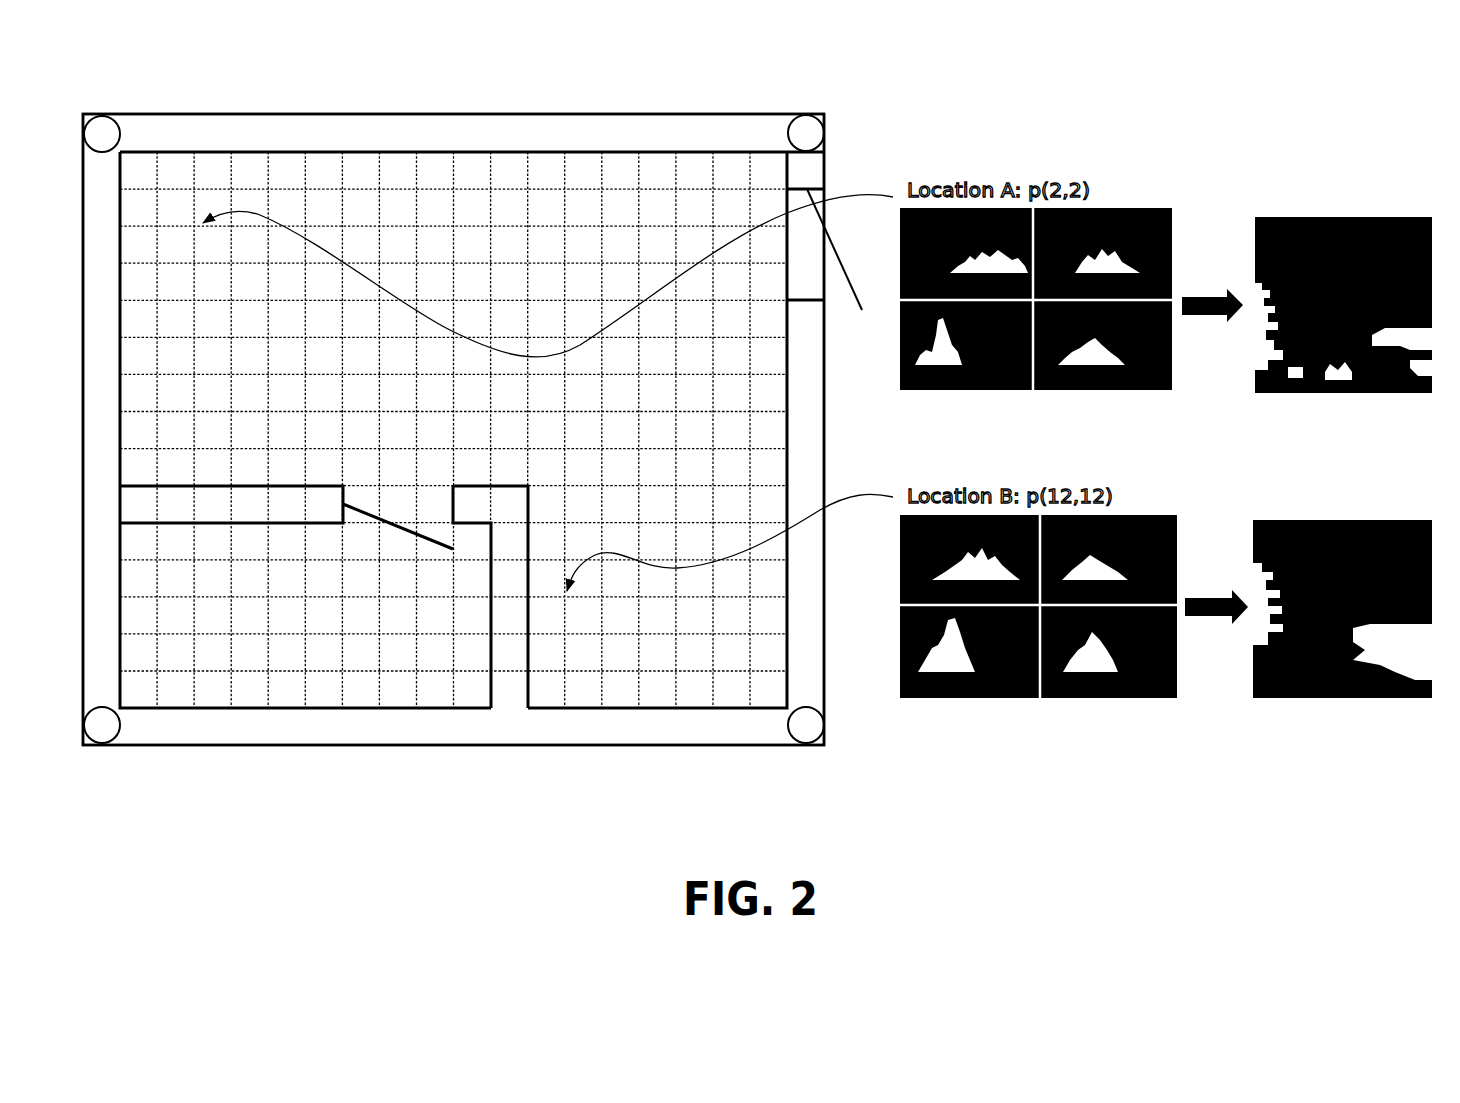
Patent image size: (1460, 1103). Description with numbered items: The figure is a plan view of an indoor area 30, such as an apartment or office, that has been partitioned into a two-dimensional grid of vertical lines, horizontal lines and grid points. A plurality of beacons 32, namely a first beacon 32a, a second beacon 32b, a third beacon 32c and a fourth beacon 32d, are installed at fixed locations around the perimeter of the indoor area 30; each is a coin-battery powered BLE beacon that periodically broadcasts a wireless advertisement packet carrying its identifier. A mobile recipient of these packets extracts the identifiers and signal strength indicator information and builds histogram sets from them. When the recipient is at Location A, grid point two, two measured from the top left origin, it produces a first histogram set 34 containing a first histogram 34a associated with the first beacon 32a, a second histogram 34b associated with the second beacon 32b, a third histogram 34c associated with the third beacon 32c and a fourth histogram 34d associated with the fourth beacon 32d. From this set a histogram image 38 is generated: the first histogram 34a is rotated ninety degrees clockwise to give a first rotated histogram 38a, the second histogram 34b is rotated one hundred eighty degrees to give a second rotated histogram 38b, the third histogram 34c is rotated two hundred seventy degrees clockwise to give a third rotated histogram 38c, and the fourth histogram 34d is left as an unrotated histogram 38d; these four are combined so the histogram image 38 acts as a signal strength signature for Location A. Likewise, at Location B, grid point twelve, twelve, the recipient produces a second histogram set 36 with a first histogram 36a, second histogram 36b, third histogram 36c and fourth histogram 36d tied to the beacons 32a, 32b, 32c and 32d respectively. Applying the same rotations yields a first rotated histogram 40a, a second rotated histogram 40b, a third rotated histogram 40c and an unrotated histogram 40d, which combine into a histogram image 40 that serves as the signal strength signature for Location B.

The indoor area 30 is at (362, 116).
The beacons 32 is at (192, 47).
The first beacon 32a is at (102, 117).
The second beacon 32b is at (808, 122).
The third beacon 32c is at (102, 746).
The fourth beacon 32d is at (810, 746).
The first histogram set 34 is at (1038, 257).
The first histogram 34a is at (900, 222).
The second histogram 34b is at (1172, 233).
The third histogram 34c is at (990, 390).
The fourth histogram 34d is at (1140, 392).
The second histogram set 36 is at (1036, 634).
The first histogram 36a is at (900, 528).
The second histogram 36b is at (1177, 540).
The third histogram 36c is at (990, 698).
The fourth histogram 36d is at (1140, 700).
The histogram image 38 is at (1328, 260).
The first rotated histogram 38a is at (1258, 343).
The second rotated histogram 38b is at (1342, 217).
The third rotated histogram 38c is at (1430, 367).
The unrotated histogram 38d is at (1338, 393).
The histogram image 40 is at (1328, 630).
The first rotated histogram 40a is at (1258, 648).
The second rotated histogram 40b is at (1342, 520).
The third rotated histogram 40c is at (1430, 668).
The unrotated histogram 40d is at (1338, 698).